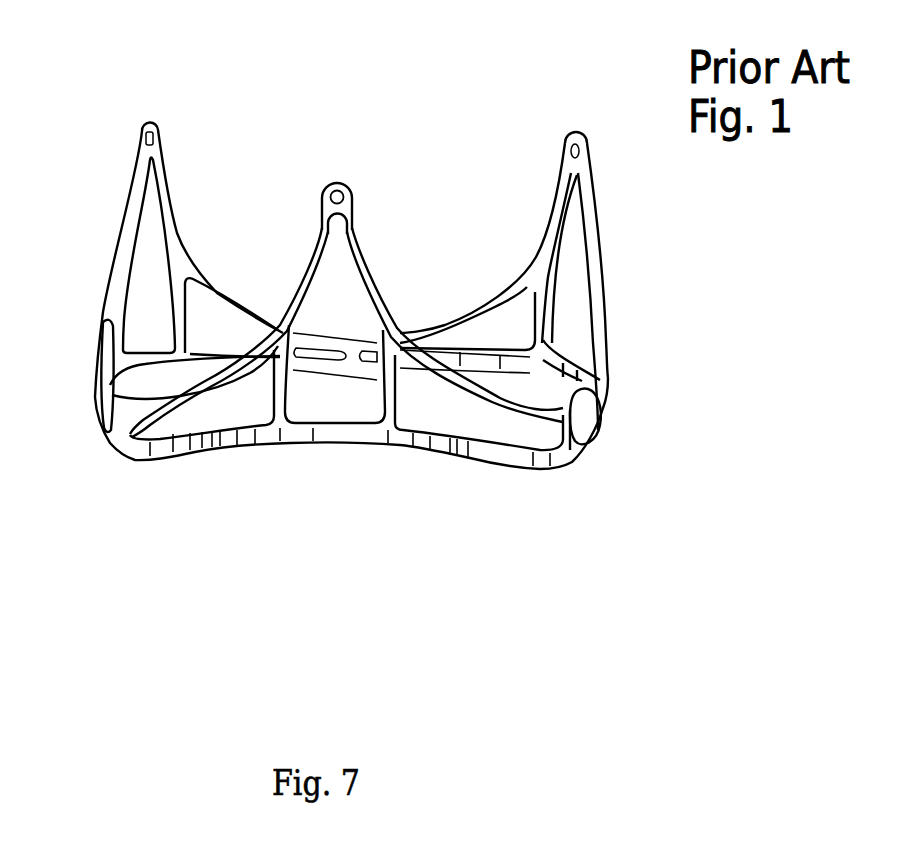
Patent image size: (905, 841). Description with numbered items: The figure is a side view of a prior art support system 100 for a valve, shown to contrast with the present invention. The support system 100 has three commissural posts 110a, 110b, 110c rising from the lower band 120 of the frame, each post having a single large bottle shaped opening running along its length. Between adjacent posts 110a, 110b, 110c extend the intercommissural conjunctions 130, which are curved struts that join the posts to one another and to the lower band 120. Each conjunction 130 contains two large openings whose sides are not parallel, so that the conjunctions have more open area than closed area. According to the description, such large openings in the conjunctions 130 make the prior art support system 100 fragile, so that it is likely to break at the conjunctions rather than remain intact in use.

The prosthetic heart valve frame 100 is at (204, 43).
The commissure post 110a is at (147, 127).
The commissure post 110b is at (346, 192).
The commissure post 110c is at (583, 150).
The annular base band 120 is at (194, 450).
The scalloped strut 130 is at (440, 357).